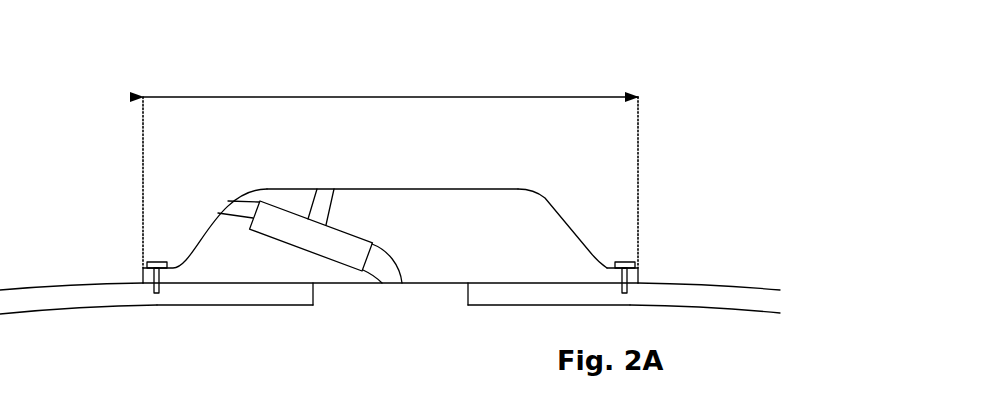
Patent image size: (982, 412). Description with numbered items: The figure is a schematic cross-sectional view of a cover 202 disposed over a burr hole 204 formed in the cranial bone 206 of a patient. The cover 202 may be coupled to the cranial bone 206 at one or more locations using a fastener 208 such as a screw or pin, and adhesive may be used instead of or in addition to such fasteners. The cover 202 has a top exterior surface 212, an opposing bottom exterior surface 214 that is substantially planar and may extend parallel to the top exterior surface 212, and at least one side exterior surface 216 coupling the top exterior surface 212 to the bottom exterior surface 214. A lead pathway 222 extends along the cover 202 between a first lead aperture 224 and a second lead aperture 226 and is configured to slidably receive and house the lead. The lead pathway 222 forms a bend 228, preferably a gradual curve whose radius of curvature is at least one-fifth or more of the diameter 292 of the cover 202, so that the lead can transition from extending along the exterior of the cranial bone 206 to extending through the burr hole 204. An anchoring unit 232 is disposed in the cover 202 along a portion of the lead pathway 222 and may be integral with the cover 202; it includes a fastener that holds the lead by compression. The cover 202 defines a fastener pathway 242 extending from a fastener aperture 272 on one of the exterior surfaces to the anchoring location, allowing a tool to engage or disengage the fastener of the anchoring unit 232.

The cover 202 is at (390, 206).
The burr hole 204 is at (390, 320).
The cranial bone 206 is at (43, 295).
The fastener 208 is at (160, 262).
The top exterior surface 212 is at (407, 188).
The bottom exterior surface 214 is at (348, 284).
The side exterior surface 216 is at (567, 215).
The lead pathway 222 is at (288, 253).
The first lead aperture 224 is at (215, 201).
The second lead aperture 226 is at (398, 290).
The bend 228 is at (312, 241).
The anchoring unit 232 is at (280, 213).
The fastener pathway 242 is at (347, 173).
The fastener aperture 272 is at (338, 185).
The diameter 292 is at (537, 95).